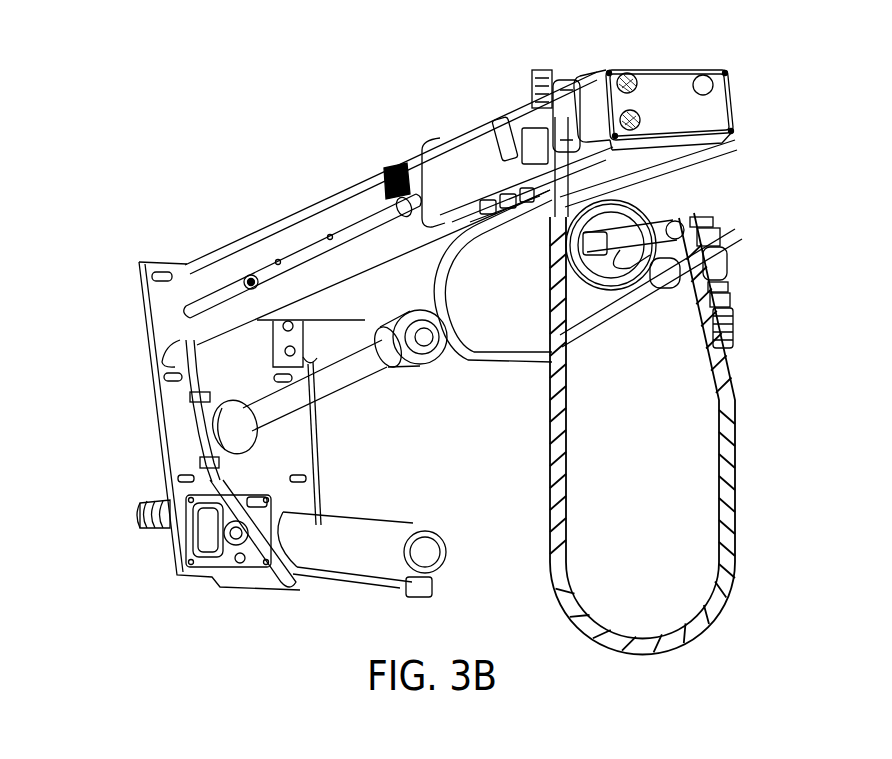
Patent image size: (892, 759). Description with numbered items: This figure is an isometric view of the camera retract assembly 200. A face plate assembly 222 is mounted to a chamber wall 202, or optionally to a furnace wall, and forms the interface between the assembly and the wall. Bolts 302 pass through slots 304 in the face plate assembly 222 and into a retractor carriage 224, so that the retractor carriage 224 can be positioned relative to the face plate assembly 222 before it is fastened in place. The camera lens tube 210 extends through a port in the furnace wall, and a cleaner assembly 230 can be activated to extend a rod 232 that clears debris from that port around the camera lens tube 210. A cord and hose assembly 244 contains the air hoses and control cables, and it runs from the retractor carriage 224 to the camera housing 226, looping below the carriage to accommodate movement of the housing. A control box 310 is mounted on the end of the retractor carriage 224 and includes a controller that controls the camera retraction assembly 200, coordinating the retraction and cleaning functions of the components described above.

The camera retract assembly 200 is at (164, 131).
The chamber wall 202 is at (152, 424).
The camera lens tube 210 is at (322, 430).
The face plate assembly 222 is at (388, 170).
The retractor carriage 224 is at (483, 110).
The camera housing 226 is at (572, 322).
The cleaner assembly 230 is at (412, 522).
The rod 232 is at (160, 530).
The cord and hose assembly 244 is at (567, 550).
The bolts 302 is at (384, 180).
The slots 304 is at (288, 257).
The control box 310 is at (668, 72).